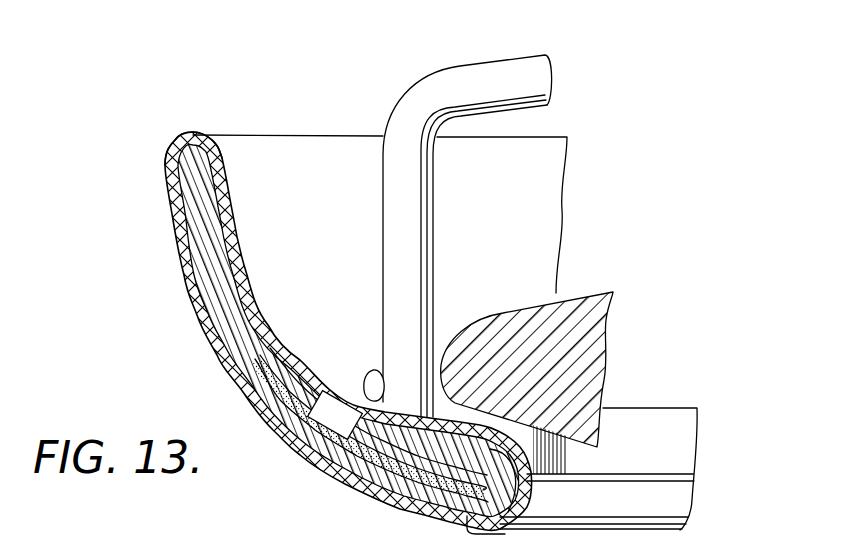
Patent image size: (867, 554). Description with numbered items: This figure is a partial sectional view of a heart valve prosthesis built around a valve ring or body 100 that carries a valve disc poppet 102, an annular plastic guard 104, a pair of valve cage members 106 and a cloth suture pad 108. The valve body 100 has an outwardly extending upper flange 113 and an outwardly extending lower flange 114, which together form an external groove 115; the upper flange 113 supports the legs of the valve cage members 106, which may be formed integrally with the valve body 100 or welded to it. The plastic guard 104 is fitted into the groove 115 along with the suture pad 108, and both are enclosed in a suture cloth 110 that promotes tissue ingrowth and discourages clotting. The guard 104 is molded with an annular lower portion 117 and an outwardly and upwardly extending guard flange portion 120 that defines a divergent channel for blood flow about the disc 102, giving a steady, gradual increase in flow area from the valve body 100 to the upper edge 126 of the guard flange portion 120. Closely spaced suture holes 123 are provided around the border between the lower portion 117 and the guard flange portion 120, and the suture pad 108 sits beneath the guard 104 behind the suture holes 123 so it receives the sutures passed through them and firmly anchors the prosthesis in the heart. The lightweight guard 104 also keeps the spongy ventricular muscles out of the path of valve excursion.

The valve body 100 is at (538, 462).
The valve disc poppet 102 is at (606, 350).
The annular plastic guard 104 is at (224, 258).
The valve cage member 106 is at (486, 54).
The cloth suture pad 108 is at (370, 485).
The suture cloth 110 is at (230, 187).
The upper flange 113 is at (370, 380).
The lower flange 114 is at (494, 521).
The external groove 115 is at (524, 488).
The annular lower portion 117 is at (407, 475).
The guard flange portion 120 is at (230, 292).
The suture holes 123 is at (298, 455).
The upper edge 126 is at (198, 133).